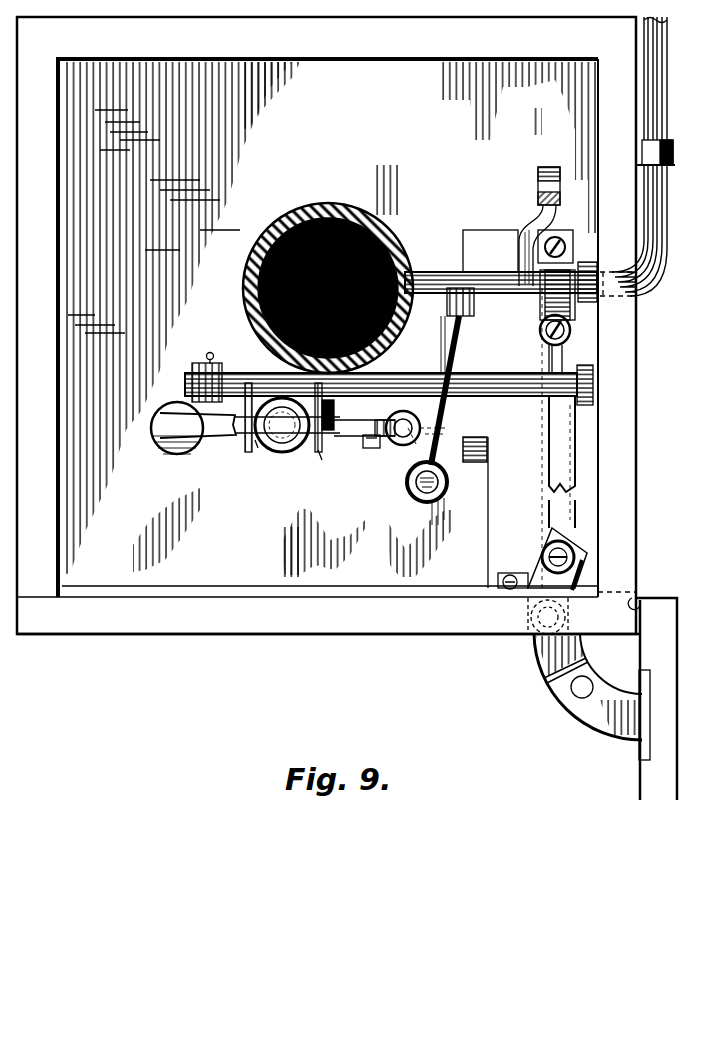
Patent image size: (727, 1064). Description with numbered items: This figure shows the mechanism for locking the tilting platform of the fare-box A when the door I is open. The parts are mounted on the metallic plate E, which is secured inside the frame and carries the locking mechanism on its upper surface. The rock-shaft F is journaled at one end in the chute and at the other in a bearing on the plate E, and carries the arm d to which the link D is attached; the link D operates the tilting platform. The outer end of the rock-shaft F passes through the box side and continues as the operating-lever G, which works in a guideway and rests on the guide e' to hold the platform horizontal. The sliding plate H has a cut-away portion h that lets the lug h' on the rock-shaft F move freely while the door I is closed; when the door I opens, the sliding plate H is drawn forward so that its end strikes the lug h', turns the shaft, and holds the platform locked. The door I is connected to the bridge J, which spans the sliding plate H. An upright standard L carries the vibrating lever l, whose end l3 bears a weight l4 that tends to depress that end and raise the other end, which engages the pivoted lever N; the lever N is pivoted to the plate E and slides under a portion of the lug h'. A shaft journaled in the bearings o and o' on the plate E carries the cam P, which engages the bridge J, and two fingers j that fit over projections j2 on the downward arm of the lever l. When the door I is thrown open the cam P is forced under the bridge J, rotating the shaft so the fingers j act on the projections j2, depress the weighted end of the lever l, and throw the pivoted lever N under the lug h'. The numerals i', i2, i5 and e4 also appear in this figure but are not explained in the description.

The fare-box A is at (328, 325).
The metallic plate E is at (329, 319).
The rock-shaft F is at (420, 273).
The arm d is at (518, 247).
The link D is at (538, 183).
The lug h' is at (476, 307).
The pivoted lever N is at (450, 340).
The sliding plate H is at (389, 378).
The bridge J is at (557, 321).
The cam P is at (545, 428).
The bearing o' is at (515, 410).
The cut-away portion h is at (475, 465).
The ring i' is at (282, 425).
The rod i2 is at (300, 455).
The projections j2 is at (240, 452).
The fingers j is at (250, 452).
The eye i5 is at (403, 440).
The upright standard L is at (372, 448).
The end of the lever l3 is at (170, 438).
The weight l4 is at (151, 409).
The vibrating arm or lever l is at (220, 438).
The bearing o is at (193, 369).
The operating-lever G is at (668, 212).
The guide e' is at (665, 152).
The door I is at (637, 696).
The pivot e4 is at (585, 669).